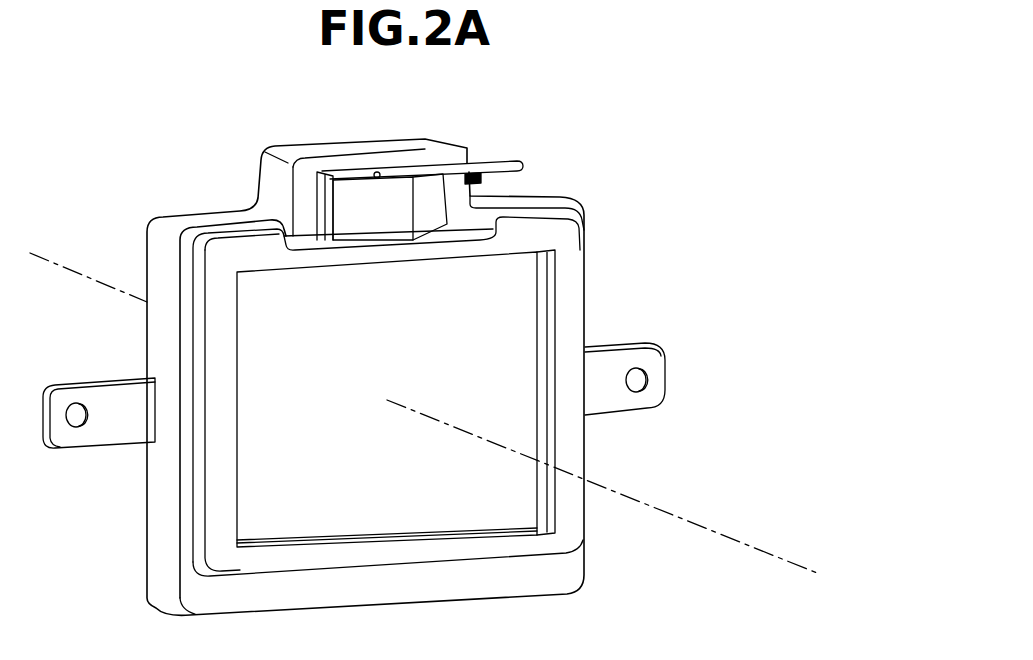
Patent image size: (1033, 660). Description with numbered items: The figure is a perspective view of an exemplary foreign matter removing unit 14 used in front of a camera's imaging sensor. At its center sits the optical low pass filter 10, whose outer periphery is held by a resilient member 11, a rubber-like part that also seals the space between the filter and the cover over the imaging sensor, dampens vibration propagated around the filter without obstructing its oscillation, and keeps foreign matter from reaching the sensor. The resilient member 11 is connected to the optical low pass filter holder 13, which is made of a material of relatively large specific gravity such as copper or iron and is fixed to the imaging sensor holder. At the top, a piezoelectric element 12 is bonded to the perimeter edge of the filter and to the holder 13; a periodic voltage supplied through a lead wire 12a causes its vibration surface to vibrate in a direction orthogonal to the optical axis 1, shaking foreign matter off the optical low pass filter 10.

The optical axis 1 is at (706, 527).
The optical low pass filter 10 is at (498, 320).
The resilient member 11 is at (570, 443).
The piezoelectric element 12 is at (397, 213).
The lead wire 12a is at (500, 161).
The optical low pass filter holder 13 is at (556, 573).
The foreign matter removing unit 14 is at (690, 196).